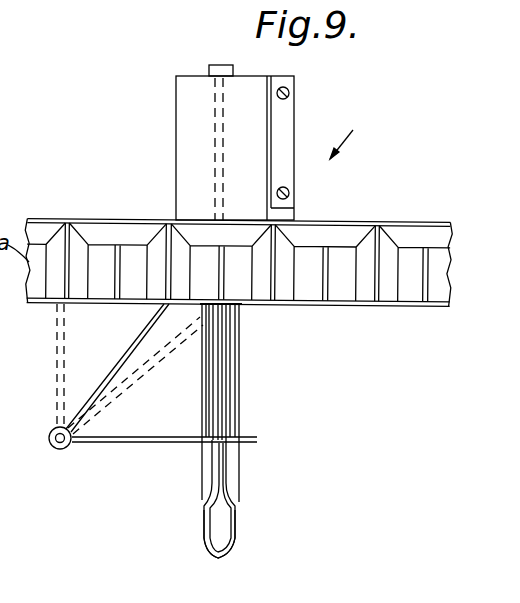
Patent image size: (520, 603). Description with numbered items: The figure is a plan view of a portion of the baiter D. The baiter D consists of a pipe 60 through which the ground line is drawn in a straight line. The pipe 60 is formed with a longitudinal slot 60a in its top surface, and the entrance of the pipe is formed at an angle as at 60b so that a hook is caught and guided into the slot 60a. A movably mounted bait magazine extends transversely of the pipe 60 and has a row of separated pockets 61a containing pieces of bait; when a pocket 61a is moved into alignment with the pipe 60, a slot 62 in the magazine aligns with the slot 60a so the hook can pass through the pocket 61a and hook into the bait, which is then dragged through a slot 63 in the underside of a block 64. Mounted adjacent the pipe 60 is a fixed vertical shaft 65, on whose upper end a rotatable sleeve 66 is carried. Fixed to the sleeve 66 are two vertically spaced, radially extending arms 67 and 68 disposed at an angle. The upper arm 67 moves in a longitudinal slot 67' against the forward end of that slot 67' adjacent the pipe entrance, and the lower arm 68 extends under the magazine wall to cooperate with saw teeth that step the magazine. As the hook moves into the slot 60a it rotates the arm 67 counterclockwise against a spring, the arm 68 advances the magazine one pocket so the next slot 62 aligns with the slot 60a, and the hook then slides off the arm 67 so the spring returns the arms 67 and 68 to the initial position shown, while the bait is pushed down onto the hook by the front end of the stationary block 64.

The pipe 60 is at (203, 470).
The longitudinal slot 60a is at (218, 419).
The angled entrance 60b is at (238, 513).
The pocket 61a is at (338, 257).
The slot in the magazine 62 is at (323, 288).
The slot in the block 63 is at (215, 128).
The block 64 is at (183, 99).
The fixed vertical shaft 65 is at (57, 447).
The rotatable sleeve 66 is at (49, 440).
The upper arm 67 is at (164, 426).
The longitudinal slot 67' is at (247, 403).
The lower arm 68 is at (133, 346).
The baiter D is at (352, 132).